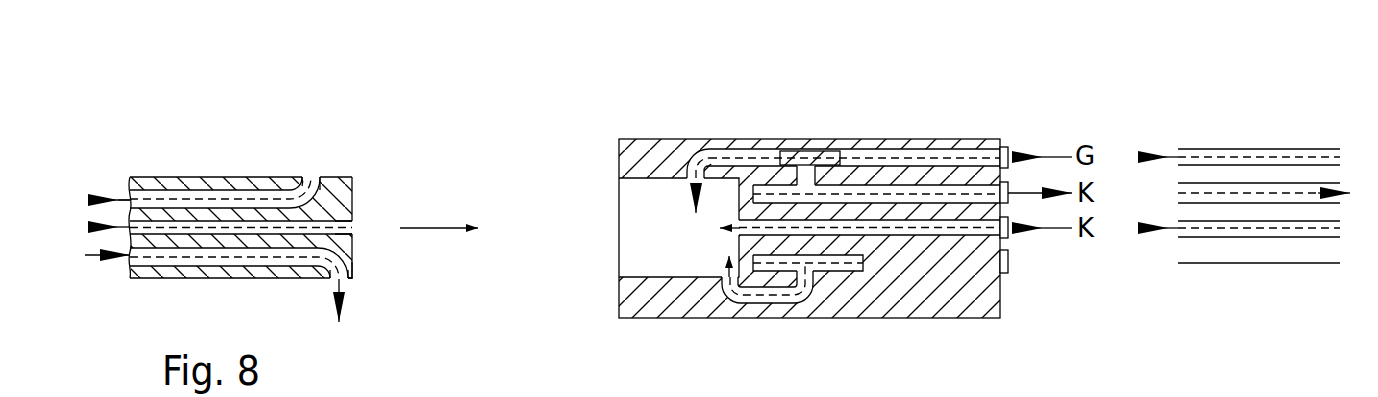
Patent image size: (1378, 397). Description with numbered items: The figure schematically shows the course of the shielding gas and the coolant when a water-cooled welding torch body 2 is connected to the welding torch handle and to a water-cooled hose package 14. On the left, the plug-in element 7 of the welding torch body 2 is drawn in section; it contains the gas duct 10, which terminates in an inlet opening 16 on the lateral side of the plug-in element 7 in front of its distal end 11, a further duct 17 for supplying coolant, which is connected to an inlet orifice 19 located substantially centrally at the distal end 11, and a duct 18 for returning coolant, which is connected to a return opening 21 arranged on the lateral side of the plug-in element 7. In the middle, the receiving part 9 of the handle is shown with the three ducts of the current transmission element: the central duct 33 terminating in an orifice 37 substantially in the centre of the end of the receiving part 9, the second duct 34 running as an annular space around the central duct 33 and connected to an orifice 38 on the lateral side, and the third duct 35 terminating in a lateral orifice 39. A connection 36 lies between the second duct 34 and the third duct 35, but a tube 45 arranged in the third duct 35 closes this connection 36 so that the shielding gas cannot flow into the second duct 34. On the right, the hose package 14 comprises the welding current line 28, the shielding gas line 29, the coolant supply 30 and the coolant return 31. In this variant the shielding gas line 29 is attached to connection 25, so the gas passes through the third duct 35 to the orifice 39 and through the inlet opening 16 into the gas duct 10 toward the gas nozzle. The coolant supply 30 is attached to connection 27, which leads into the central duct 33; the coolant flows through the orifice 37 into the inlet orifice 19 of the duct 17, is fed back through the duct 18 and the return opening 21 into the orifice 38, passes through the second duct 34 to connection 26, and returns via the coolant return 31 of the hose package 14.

The welding torch body 2 is at (130, 150).
The plug-in element 7 is at (260, 175).
The receiving part 9 is at (635, 242).
The gas duct 10 is at (183, 197).
The distal end 11 is at (358, 275).
The hose package 14 is at (1257, 185).
The inlet opening 16 is at (313, 173).
The duct 17 is at (165, 230).
The duct 18 is at (195, 260).
The inlet orifice 19 is at (356, 224).
The return opening 21 is at (329, 281).
The connection 25 is at (1008, 148).
The connection 26 is at (1008, 187).
The connection 27 is at (1007, 240).
The welding current line 28 is at (1258, 264).
The shielding gas line 29 is at (1272, 157).
The coolant supply 30 is at (1233, 232).
The coolant return 31 is at (1238, 188).
The central duct 33 is at (883, 232).
The second duct 34 is at (772, 190).
The third duct 35 is at (920, 153).
The connection 36 is at (807, 177).
The orifice 37 is at (717, 222).
The orifice 38 is at (715, 268).
The orifice 39 is at (677, 184).
The tube 45 is at (800, 152).